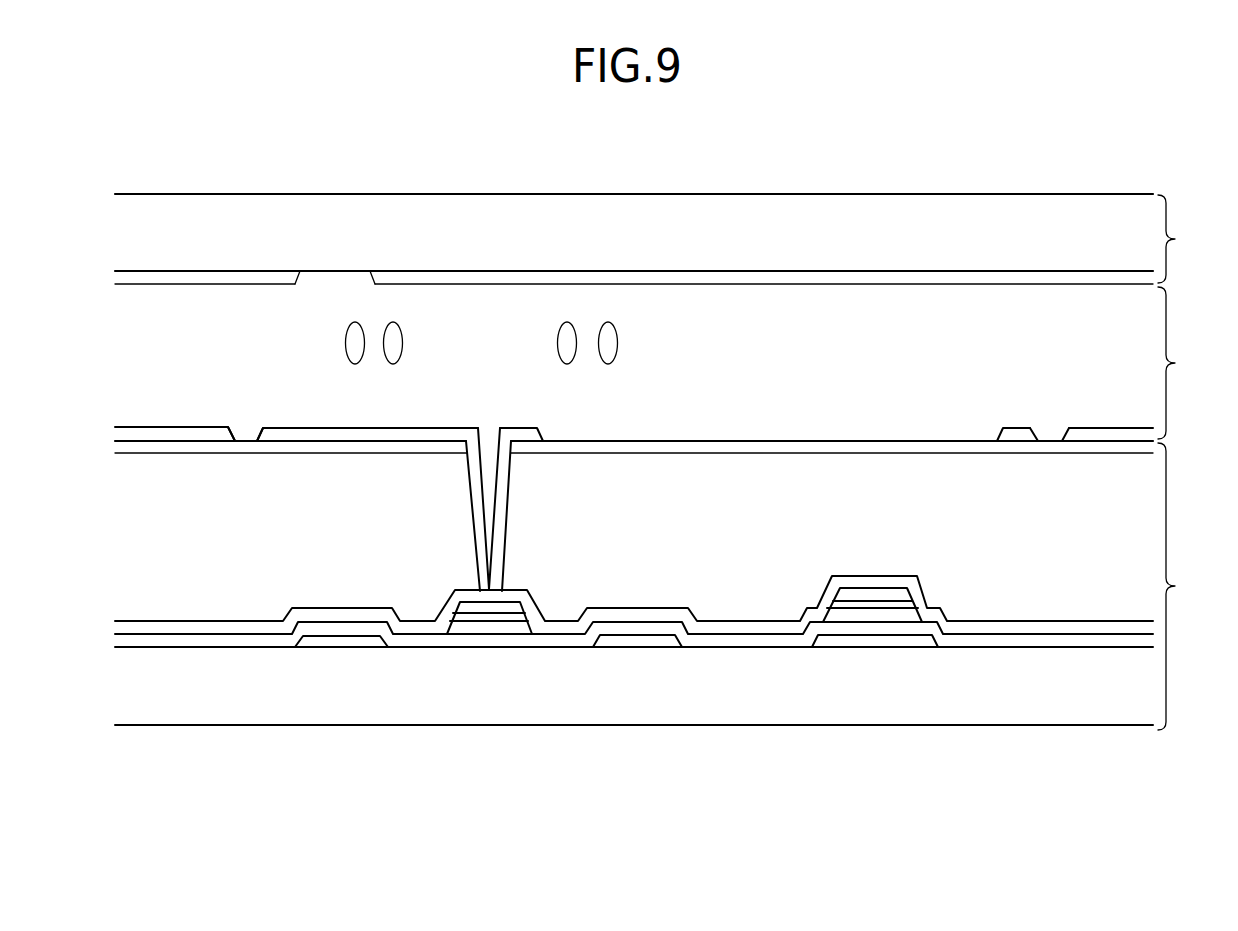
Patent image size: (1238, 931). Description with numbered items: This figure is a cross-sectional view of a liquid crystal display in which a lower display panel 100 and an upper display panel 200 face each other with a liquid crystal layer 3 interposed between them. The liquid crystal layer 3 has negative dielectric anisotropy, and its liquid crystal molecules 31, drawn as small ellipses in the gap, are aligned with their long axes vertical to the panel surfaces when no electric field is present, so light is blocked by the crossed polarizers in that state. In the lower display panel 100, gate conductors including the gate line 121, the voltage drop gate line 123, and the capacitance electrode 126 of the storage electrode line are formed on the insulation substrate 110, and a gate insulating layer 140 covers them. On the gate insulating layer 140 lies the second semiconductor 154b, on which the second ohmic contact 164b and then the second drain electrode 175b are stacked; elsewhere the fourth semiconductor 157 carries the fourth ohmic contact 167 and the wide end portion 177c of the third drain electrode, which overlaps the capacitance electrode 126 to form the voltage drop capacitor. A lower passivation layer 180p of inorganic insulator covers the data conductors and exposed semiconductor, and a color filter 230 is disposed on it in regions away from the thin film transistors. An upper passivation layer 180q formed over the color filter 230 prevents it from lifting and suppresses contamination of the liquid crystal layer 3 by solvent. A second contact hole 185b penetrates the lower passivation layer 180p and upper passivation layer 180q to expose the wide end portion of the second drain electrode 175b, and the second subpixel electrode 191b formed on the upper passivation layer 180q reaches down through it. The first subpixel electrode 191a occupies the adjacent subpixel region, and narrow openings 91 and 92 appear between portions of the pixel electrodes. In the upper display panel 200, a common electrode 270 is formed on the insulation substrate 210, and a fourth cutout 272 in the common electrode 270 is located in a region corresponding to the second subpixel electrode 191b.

The insulation substrate 210 is at (731, 218).
The upper display panel 200 is at (1189, 239).
The common electrode 270 is at (984, 276).
The fourth cutout 272 is at (300, 272).
The liquid crystal layer 3 is at (1178, 363).
The liquid crystal molecules 31 is at (403, 343).
The second subpixel electrode 191b is at (162, 432).
The gap between pixel electrodes 92 is at (234, 436).
The upper passivation layer 180q is at (296, 447).
The color filter 230 is at (848, 468).
The second contact hole 185b is at (508, 494).
The gap between pixel electrodes 91 is at (1040, 440).
The first subpixel electrode 191a is at (1112, 428).
The lower display panel 100 is at (1189, 586).
The lower passivation layer 180p is at (1041, 630).
The gate insulating layer 140 is at (752, 640).
The second drain electrode 175b is at (503, 640).
The second ohmic contact 164b is at (480, 640).
The second semiconductor 154b is at (457, 640).
The wide end portion of the third drain electrode 177c is at (897, 595).
The fourth ohmic contact 167 is at (882, 603).
The fourth semiconductor 157 is at (865, 613).
The voltage drop gate line 123 is at (344, 640).
The gate line 121 is at (655, 640).
The capacitance electrode 126 is at (838, 638).
The insulation substrate 110 is at (603, 700).